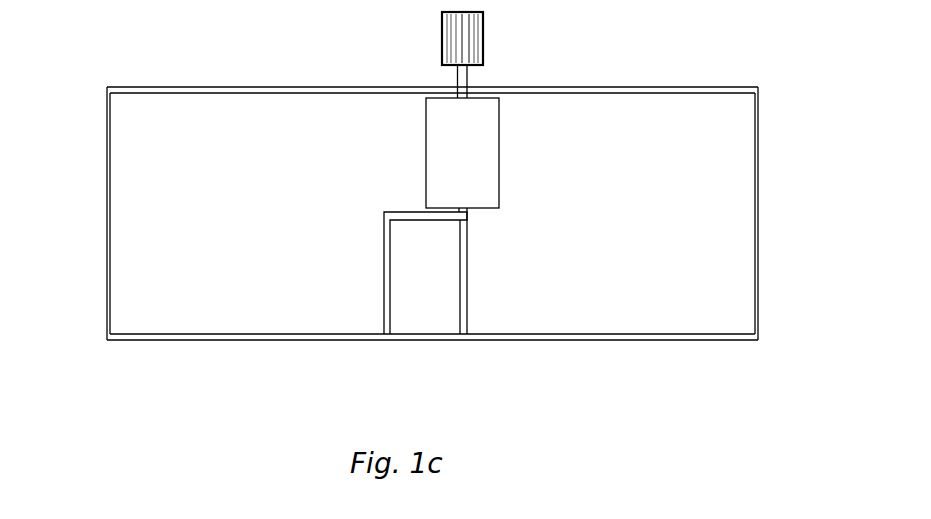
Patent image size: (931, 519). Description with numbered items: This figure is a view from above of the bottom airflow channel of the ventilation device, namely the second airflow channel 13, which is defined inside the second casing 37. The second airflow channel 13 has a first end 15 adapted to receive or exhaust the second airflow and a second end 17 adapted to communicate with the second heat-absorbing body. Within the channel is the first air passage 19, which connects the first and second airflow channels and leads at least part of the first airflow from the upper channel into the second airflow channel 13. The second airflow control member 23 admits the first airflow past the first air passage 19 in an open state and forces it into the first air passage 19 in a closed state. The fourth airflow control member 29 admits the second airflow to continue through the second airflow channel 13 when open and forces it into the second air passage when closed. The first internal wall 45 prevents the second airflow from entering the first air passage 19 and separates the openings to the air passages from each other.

The second airflow channel 13 is at (231, 227).
The first end 15 is at (126, 297).
The second end 17 is at (735, 283).
The first air passage 19 is at (430, 288).
The second airflow control member 23 is at (463, 312).
The fourth airflow control member 29 is at (483, 125).
The second casing 37 is at (647, 93).
The first internal wall 45 is at (387, 300).